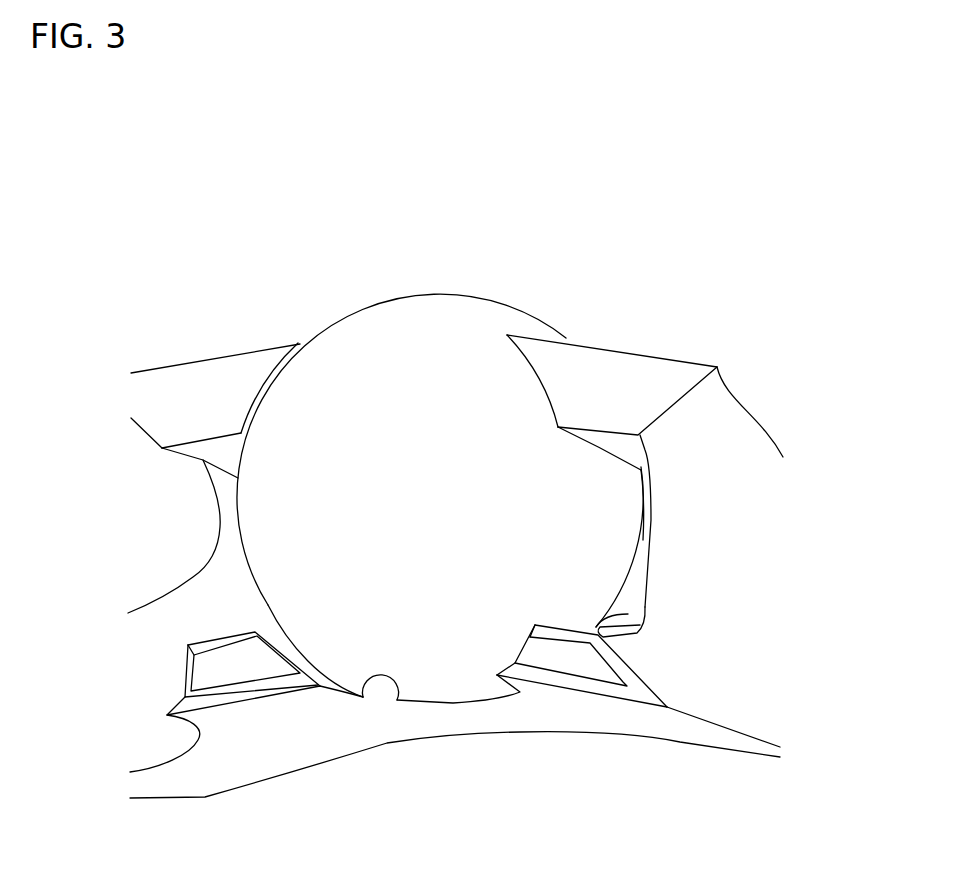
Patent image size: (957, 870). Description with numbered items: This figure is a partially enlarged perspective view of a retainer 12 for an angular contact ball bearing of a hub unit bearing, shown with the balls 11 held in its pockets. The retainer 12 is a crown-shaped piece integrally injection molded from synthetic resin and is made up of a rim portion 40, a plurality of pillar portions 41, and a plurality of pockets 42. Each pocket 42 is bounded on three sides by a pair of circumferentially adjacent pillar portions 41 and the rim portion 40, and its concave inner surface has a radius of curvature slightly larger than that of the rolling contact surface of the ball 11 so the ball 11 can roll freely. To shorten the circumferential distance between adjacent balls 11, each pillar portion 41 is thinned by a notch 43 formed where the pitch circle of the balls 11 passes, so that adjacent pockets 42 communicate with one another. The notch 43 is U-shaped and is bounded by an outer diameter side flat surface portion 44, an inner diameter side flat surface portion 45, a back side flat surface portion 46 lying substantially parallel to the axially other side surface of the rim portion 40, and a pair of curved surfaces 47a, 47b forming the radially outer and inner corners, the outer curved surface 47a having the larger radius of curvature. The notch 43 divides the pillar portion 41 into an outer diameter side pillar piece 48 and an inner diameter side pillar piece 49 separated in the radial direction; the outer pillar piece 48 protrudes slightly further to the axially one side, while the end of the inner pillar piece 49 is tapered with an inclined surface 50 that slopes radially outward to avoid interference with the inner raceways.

The ball 11 is at (428, 305).
The retainer for an angular contact ball bearing 12 is at (737, 413).
The rim portion 40 is at (487, 722).
The pillar portion 41 is at (192, 380).
The pocket 42 is at (395, 708).
The notch 43 is at (228, 527).
The outer diameter side flat surface portion 44 is at (647, 458).
The inner diameter side flat surface portion 45 is at (642, 637).
The back side flat surface portion 46 is at (648, 567).
The curved surface 47a is at (651, 488).
The curved surface 47b is at (628, 614).
The outer diameter side pillar piece 48 is at (225, 373).
The inner diameter side pillar piece 49 is at (263, 683).
The inclined surface 50 is at (230, 677).